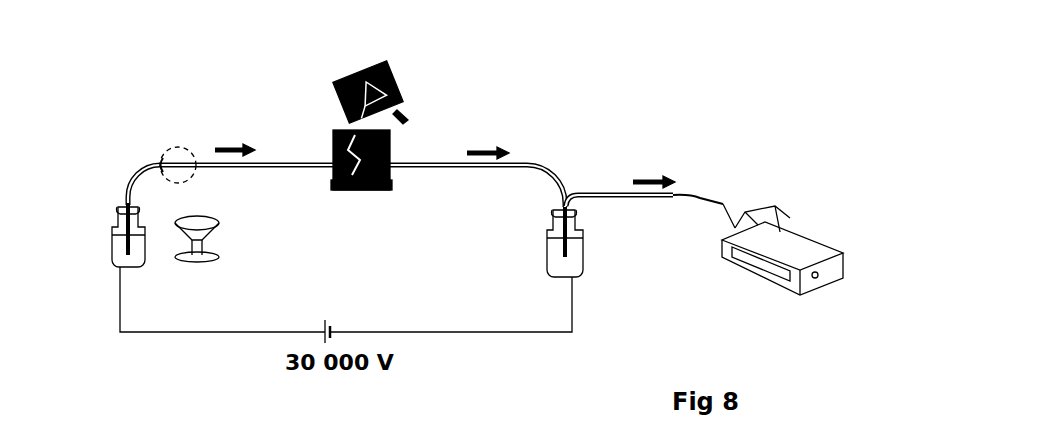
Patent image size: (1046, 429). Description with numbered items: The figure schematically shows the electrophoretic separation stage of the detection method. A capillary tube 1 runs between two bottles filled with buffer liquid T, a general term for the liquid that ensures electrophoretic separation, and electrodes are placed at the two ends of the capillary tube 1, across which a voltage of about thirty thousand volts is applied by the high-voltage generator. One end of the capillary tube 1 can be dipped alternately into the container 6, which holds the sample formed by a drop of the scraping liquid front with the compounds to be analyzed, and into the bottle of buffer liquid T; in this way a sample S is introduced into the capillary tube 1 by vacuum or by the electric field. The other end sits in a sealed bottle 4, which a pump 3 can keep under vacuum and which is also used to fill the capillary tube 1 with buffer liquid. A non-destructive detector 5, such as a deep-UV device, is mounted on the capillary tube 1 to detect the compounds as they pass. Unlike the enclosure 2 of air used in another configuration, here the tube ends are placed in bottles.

The capillary tube 1 is at (133, 181).
The enclosure 2 is at (112, 243).
The pump 3 is at (790, 208).
The sealed bottle 4 is at (583, 258).
The detector 5 is at (324, 109).
The container 6 is at (203, 243).
The sample S is at (175, 163).
The buffer liquid T is at (143, 267).